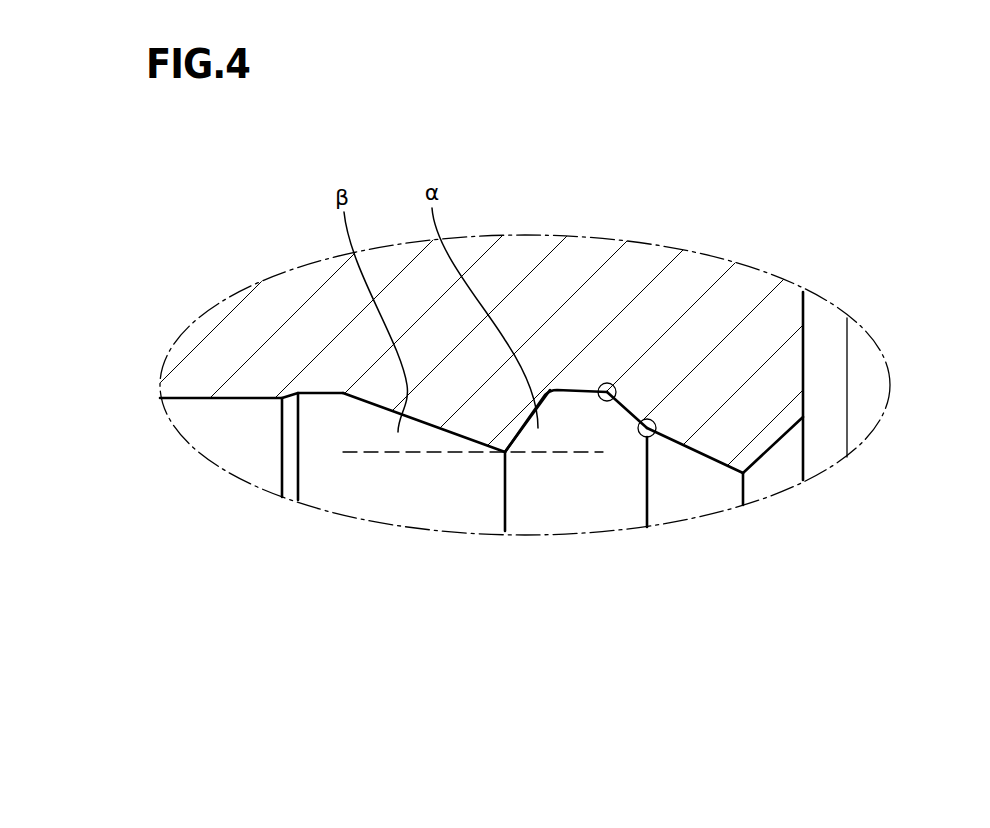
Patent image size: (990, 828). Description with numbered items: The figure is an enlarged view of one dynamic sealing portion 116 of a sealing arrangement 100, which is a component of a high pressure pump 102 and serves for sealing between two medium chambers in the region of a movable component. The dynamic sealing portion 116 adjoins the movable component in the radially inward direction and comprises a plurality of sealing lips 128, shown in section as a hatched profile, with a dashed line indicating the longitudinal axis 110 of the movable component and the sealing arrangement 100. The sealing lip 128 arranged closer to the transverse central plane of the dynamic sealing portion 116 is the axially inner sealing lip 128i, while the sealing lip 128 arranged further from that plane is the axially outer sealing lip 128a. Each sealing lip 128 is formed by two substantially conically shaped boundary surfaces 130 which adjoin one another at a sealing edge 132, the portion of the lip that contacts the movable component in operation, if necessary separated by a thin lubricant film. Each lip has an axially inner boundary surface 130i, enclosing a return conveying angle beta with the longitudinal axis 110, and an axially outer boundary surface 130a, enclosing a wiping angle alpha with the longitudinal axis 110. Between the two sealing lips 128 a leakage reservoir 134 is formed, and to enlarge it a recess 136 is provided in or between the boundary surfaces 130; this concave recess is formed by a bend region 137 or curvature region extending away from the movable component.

The sealing arrangement 100 is at (687, 158).
The high pressure pump 102 is at (620, 138).
The longitudinal axis 110 is at (356, 452).
The dynamic sealing portion 116 is at (545, 373).
The sealing lip 128 is at (491, 455).
The axially outer sealing lip 128a is at (788, 441).
The axially inner sealing lip 128i is at (446, 436).
The boundary surface 130 is at (522, 430).
The axially outer boundary surface 130a is at (538, 402).
The axially inner boundary surface 130i is at (440, 427).
The sealing edge 132 is at (508, 458).
The leakage reservoir 134 is at (623, 388).
The recess 136 is at (629, 418).
The bend region 137 is at (607, 383).